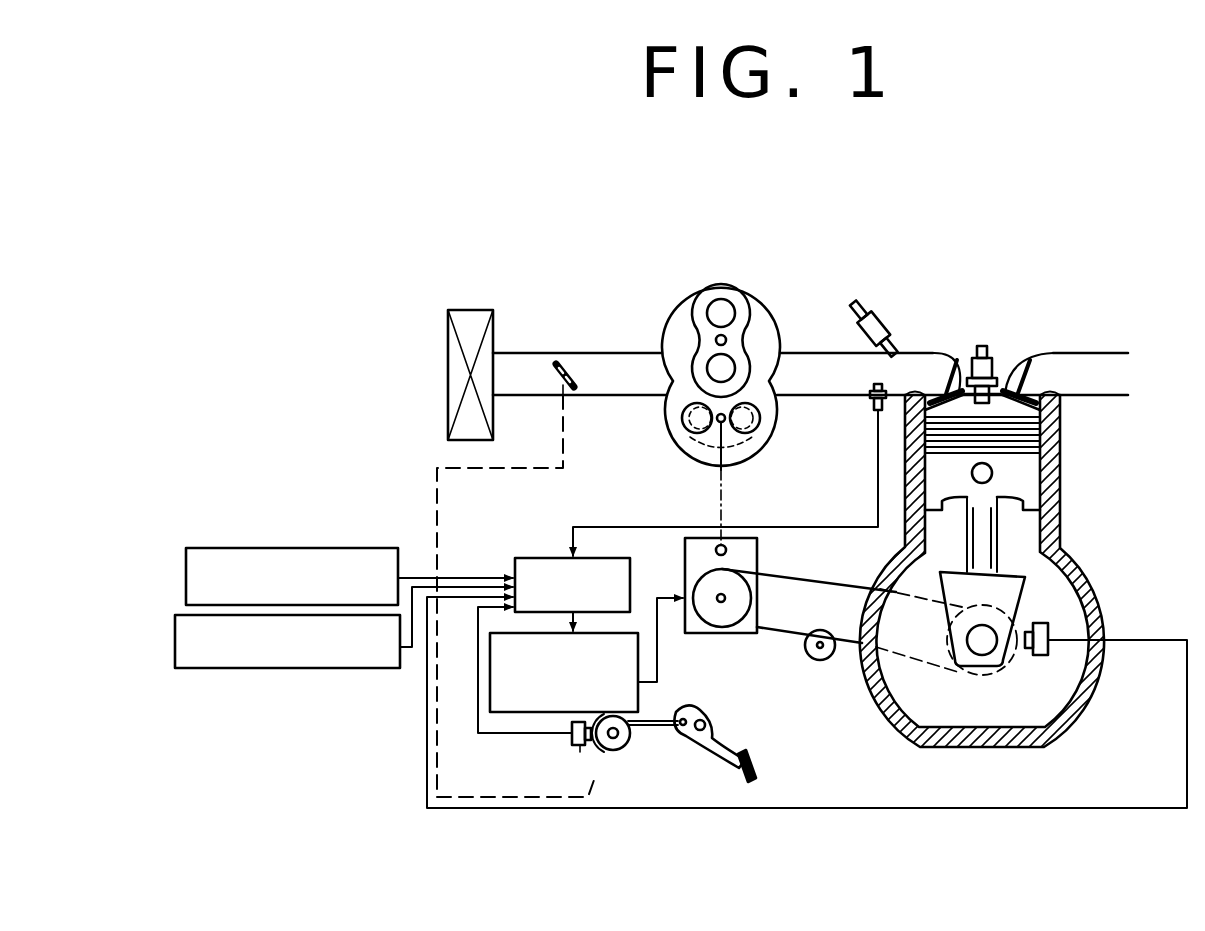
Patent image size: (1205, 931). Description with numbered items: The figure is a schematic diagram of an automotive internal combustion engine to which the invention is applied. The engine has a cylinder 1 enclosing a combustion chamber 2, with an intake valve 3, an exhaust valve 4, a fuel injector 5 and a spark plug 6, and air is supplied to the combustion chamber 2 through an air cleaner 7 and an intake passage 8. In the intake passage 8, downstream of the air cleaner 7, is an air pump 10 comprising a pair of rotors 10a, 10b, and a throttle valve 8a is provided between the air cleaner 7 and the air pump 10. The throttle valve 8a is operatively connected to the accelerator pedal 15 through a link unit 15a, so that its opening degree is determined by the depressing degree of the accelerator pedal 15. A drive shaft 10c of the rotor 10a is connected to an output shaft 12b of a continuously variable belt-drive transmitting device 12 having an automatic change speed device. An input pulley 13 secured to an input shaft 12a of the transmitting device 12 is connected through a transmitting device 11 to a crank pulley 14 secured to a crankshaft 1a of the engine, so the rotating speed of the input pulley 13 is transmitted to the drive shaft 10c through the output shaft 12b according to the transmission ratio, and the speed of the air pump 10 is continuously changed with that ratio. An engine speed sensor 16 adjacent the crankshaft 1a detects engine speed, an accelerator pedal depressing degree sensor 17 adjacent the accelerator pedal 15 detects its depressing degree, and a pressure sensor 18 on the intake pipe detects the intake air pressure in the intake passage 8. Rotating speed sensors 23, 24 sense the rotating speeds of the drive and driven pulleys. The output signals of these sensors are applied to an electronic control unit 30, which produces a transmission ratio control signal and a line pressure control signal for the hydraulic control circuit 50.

The cylinder 1 is at (1053, 520).
The crankshaft 1a is at (993, 648).
The combustion chamber 2 is at (1050, 414).
The intake valve 3 is at (962, 378).
The exhaust valve 4 is at (1012, 375).
The fuel injector 5 is at (884, 332).
The spark plug 6 is at (985, 365).
The air cleaner 7 is at (477, 320).
The intake passage 8 is at (593, 360).
The throttle valve 8a is at (575, 376).
The air pump 10 is at (692, 290).
The rotor 10a is at (760, 453).
The rotor 10b is at (758, 333).
The drive shaft 10c is at (712, 440).
The transmitting device 11 is at (818, 582).
The continuously variable belt-drive transmitting device 12 is at (757, 554).
The input shaft 12a is at (724, 602).
The output shaft 12b is at (725, 546).
The input pulley 13 is at (748, 590).
The crank pulley 14 is at (985, 670).
The accelerator pedal 15 is at (720, 731).
The link unit 15a is at (437, 778).
The engine speed sensor 16 is at (1043, 622).
The accelerator pedal depressing degree sensor 17 is at (607, 755).
The pressure sensor 18 is at (870, 412).
The rotating speed sensor 23 is at (186, 578).
The rotating speed sensor 24 is at (175, 643).
The electronic control unit 30 is at (632, 570).
The hydraulic control circuit 50 is at (640, 692).